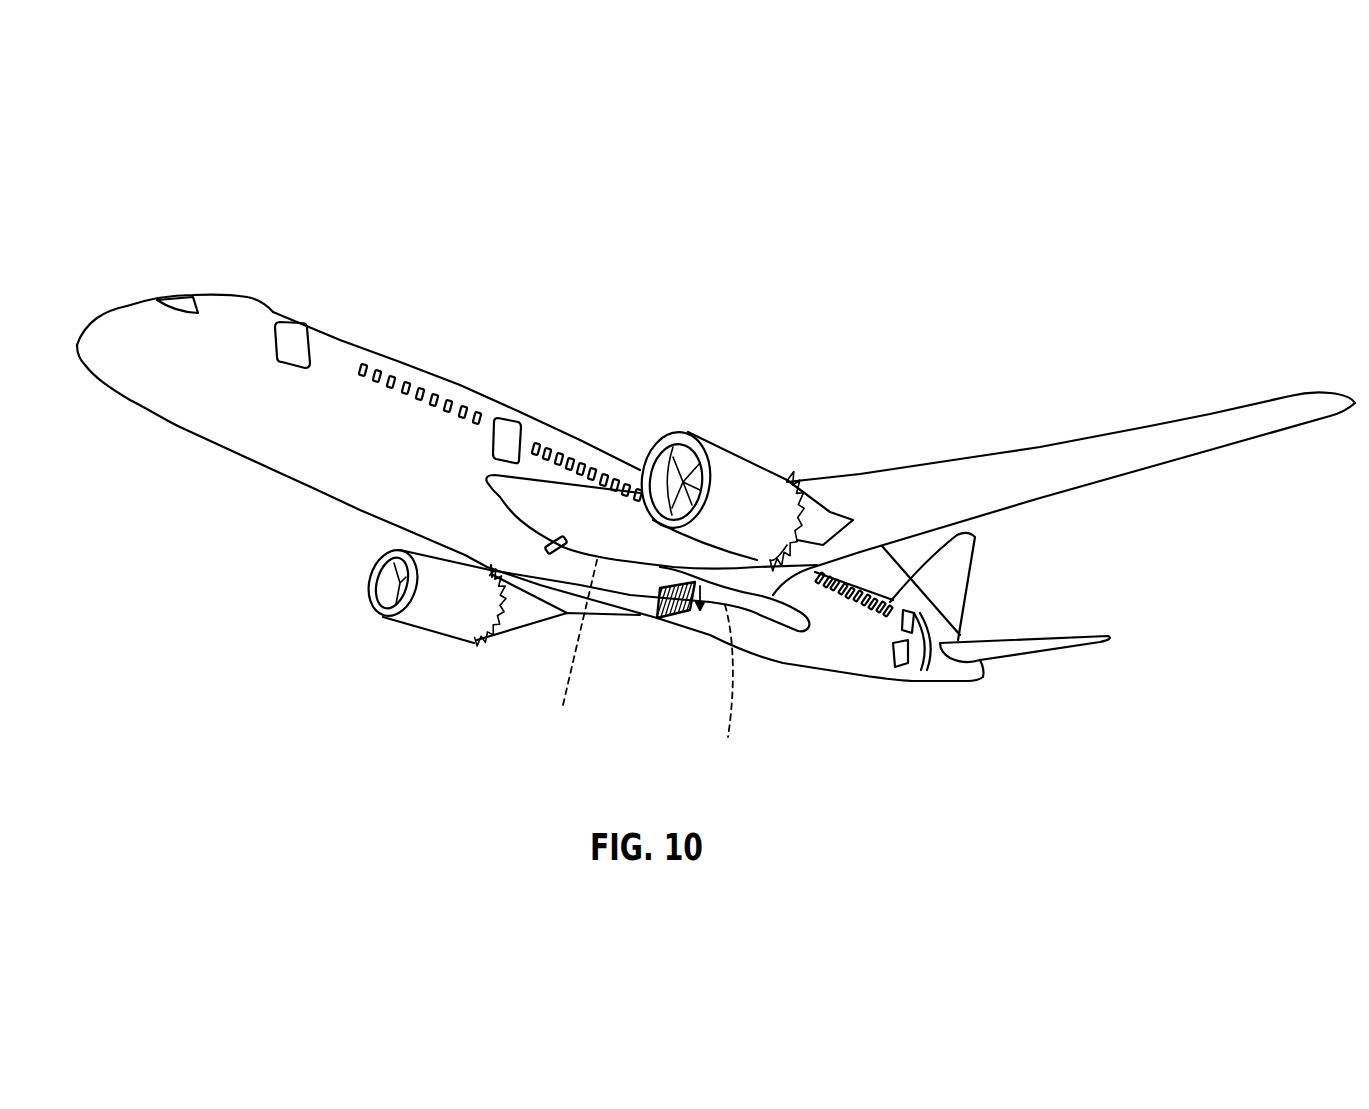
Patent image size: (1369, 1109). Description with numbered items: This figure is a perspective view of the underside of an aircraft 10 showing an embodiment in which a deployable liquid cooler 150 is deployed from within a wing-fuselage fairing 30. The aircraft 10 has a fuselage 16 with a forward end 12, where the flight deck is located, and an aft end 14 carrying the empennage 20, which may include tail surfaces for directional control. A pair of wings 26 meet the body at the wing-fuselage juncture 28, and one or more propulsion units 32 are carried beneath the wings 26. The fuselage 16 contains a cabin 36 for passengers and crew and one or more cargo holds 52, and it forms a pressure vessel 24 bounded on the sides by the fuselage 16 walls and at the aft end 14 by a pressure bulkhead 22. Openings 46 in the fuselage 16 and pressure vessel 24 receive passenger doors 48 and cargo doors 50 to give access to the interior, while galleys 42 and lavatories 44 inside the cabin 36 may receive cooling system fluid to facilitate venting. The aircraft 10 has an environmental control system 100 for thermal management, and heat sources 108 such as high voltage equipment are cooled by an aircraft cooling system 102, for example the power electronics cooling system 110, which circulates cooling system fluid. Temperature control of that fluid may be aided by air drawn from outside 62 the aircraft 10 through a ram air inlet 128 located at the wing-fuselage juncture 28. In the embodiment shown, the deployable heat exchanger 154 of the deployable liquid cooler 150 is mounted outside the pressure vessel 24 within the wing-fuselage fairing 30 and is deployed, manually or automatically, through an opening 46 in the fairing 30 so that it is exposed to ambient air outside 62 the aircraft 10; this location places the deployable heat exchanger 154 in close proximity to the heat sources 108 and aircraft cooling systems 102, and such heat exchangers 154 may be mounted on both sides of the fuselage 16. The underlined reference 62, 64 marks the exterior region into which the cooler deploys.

The aircraft 10 is at (220, 297).
The forward end 12 is at (77, 335).
The aft end 14 is at (960, 682).
The fuselage 16 is at (616, 473).
The empennage 20 is at (958, 575).
The pressure bulkhead 22 is at (923, 673).
The pressure vessel 24 is at (435, 368).
The wings 26 is at (1102, 433).
The wing-fuselage juncture 28 is at (647, 601).
The wing-fuselage fairing 30 is at (773, 622).
The propulsion units 32 is at (747, 460).
The cabin 36 is at (598, 450).
The galleys 42 is at (300, 309).
The lavatories 44 is at (298, 315).
The openings 46 is at (536, 489).
The passenger doors 48 is at (244, 377).
The cargo doors 50 is at (893, 647).
The cargo holds 52 is at (293, 468).
The outside 62 is at (847, 787).
The composite laminate 64 is at (877, 799).
The environmental control system 100 is at (553, 649).
The aircraft cooling system 102 is at (553, 649).
The heat sources 108 is at (731, 685).
The power electronics cooling system 110 is at (731, 685).
The ram air inlet 128 is at (552, 552).
The deployable liquid cooler 150 is at (665, 653).
The deployable heat exchanger 154 is at (675, 617).